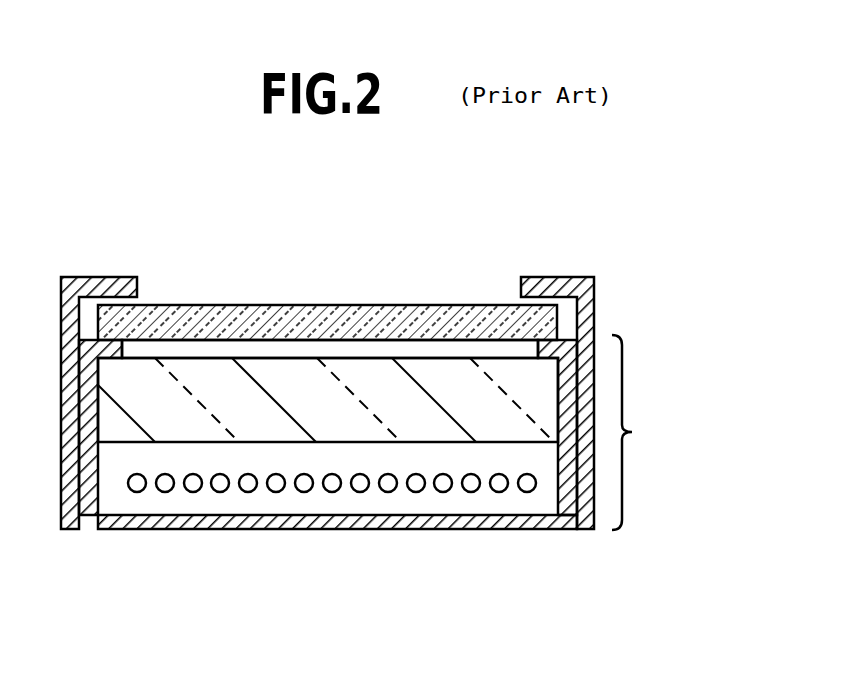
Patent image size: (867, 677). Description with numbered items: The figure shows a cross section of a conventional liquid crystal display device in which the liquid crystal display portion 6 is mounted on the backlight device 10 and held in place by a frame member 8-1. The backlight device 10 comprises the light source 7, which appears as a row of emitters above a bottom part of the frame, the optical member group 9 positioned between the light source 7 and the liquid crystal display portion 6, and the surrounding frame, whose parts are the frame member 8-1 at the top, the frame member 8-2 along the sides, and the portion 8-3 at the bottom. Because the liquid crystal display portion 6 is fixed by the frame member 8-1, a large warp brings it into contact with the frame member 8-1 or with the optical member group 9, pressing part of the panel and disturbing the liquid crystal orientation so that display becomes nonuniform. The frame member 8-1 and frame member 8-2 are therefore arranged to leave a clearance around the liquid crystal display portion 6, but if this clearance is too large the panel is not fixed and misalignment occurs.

The liquid crystal display portion 6 is at (340, 305).
The light source 7 is at (388, 494).
The frame member 8-1 is at (558, 278).
The frame member 8-2 is at (572, 529).
The bottom frame (chassis) 8-3 is at (440, 529).
The optical member group 9 is at (303, 420).
The backlight device 10 is at (643, 432).